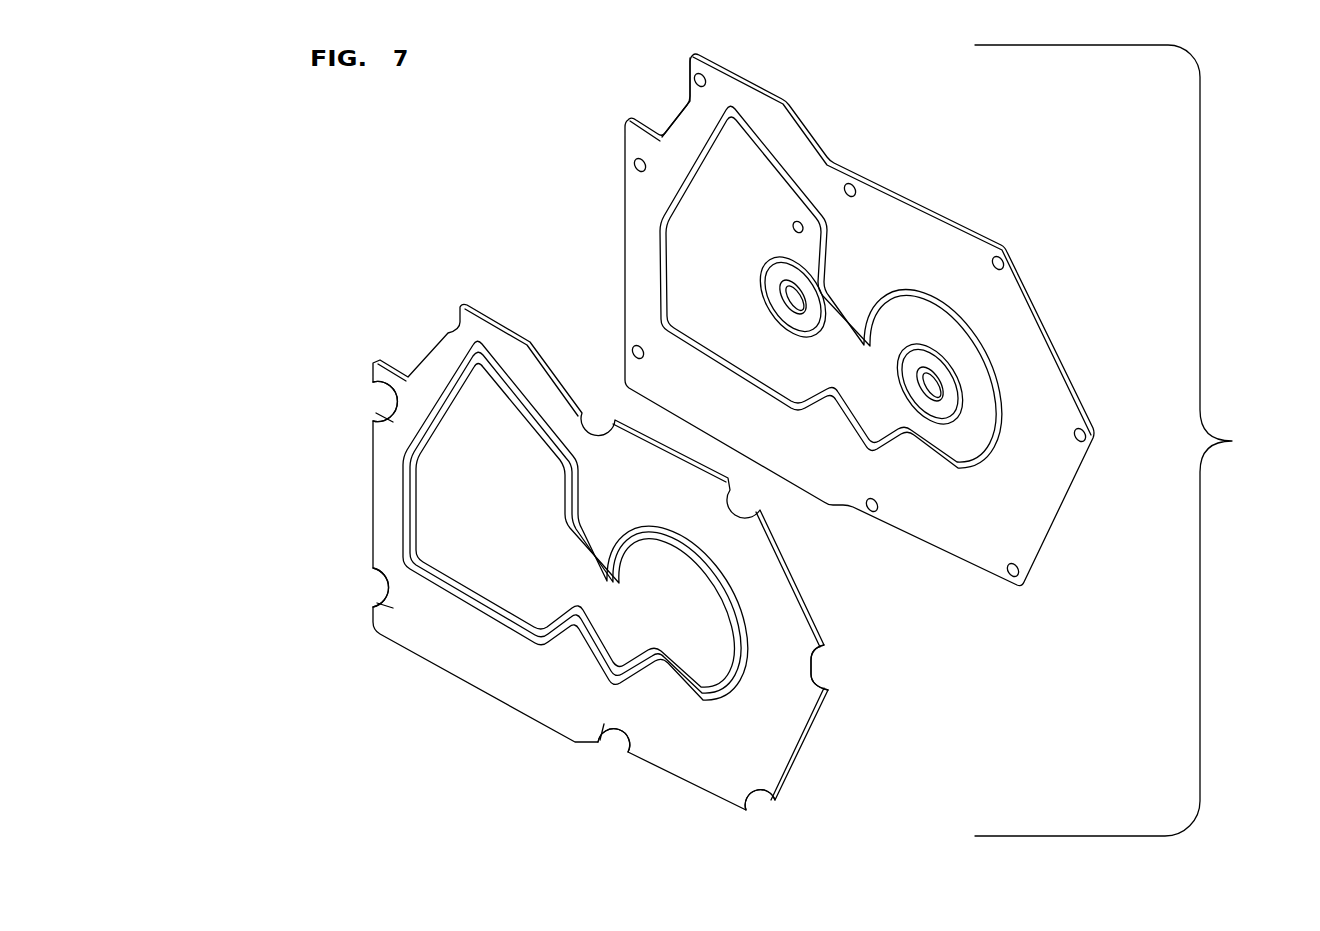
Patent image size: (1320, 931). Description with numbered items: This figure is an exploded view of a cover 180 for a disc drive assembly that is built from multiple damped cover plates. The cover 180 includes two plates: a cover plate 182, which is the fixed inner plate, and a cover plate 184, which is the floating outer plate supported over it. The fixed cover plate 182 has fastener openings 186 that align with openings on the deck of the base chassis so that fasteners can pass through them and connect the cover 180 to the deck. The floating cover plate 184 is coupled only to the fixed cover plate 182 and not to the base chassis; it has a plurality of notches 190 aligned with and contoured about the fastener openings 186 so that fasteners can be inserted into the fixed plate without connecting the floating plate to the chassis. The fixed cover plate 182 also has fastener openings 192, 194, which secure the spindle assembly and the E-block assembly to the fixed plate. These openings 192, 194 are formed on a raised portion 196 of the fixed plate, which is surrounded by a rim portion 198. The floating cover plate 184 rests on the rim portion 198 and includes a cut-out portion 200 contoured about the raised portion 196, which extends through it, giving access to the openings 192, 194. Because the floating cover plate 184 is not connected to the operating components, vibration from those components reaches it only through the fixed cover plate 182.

The cover 180 is at (1128, 440).
The cover plate 182 is at (1035, 288).
The cover plate 184 is at (828, 630).
The fastener openings 186 is at (694, 80).
The notches 190 is at (395, 393).
The fastener opening 192 is at (933, 380).
The fastener opening 194 is at (800, 292).
The raised portion 196 is at (748, 222).
The rim portion 198 is at (692, 162).
The cut-out portion 200 is at (518, 535).